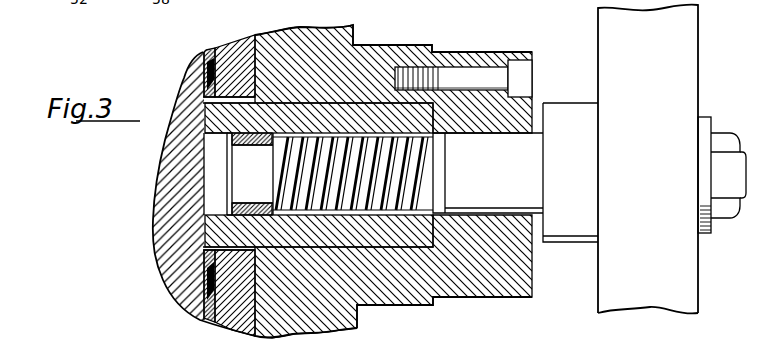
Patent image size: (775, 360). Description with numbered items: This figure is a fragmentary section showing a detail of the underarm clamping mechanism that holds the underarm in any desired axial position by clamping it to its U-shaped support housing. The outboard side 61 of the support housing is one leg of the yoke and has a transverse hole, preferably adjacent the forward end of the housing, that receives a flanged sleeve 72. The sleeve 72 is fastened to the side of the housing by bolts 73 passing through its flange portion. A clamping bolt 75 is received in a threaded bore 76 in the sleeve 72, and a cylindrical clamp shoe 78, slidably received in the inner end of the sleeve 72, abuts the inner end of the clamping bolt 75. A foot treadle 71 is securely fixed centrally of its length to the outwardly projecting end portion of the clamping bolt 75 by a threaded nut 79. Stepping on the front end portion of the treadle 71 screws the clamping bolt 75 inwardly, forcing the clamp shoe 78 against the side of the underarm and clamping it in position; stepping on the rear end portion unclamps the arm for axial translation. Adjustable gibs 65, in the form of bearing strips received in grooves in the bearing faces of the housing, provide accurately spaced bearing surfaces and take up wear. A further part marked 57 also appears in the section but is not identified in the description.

The housing 57 is at (168, 157).
The outboard side 61 is at (310, 37).
The adjustable gib 65 is at (203, 70).
The foot treadle 71 is at (688, 97).
The flanged sleeve 72 is at (485, 53).
The bolt 73 is at (527, 78).
The clamping bolt 75 is at (227, 155).
The threaded bore 76 is at (432, 150).
The cylindrical clamp shoe 78 is at (227, 157).
The threaded nut 79 is at (723, 138).